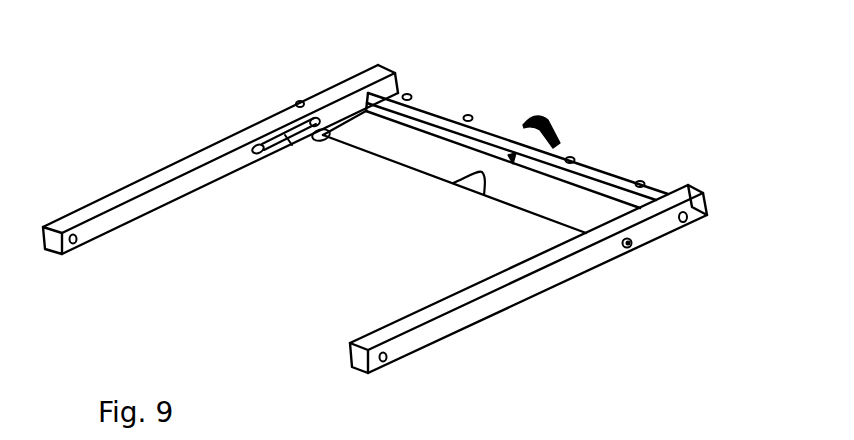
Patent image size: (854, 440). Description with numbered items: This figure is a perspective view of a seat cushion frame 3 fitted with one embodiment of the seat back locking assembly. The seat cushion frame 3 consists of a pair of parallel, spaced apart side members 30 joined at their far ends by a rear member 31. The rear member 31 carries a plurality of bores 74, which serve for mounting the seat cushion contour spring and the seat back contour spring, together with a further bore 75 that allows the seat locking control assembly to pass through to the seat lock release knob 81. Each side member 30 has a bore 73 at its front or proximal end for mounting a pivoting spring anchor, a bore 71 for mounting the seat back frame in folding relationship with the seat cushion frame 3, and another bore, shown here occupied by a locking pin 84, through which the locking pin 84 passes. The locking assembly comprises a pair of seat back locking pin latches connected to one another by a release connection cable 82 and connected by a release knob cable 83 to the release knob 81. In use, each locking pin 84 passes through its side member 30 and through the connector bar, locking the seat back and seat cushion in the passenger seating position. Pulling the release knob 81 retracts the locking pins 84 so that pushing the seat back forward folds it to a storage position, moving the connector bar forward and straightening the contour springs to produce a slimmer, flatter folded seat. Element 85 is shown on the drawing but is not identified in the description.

The seat cushion frame 3 is at (196, 292).
The side member 30 is at (513, 297).
The rear member 31 is at (503, 133).
The bore 71 is at (687, 222).
The bore 73 is at (77, 243).
The bores 74 is at (407, 94).
The bore 75 is at (512, 158).
The seat lock release knob 81 is at (535, 117).
The release connection cable 82 is at (423, 172).
The release knob cable 83 is at (512, 158).
The locking pin 84 is at (300, 103).
The bracket 85 is at (300, 146).